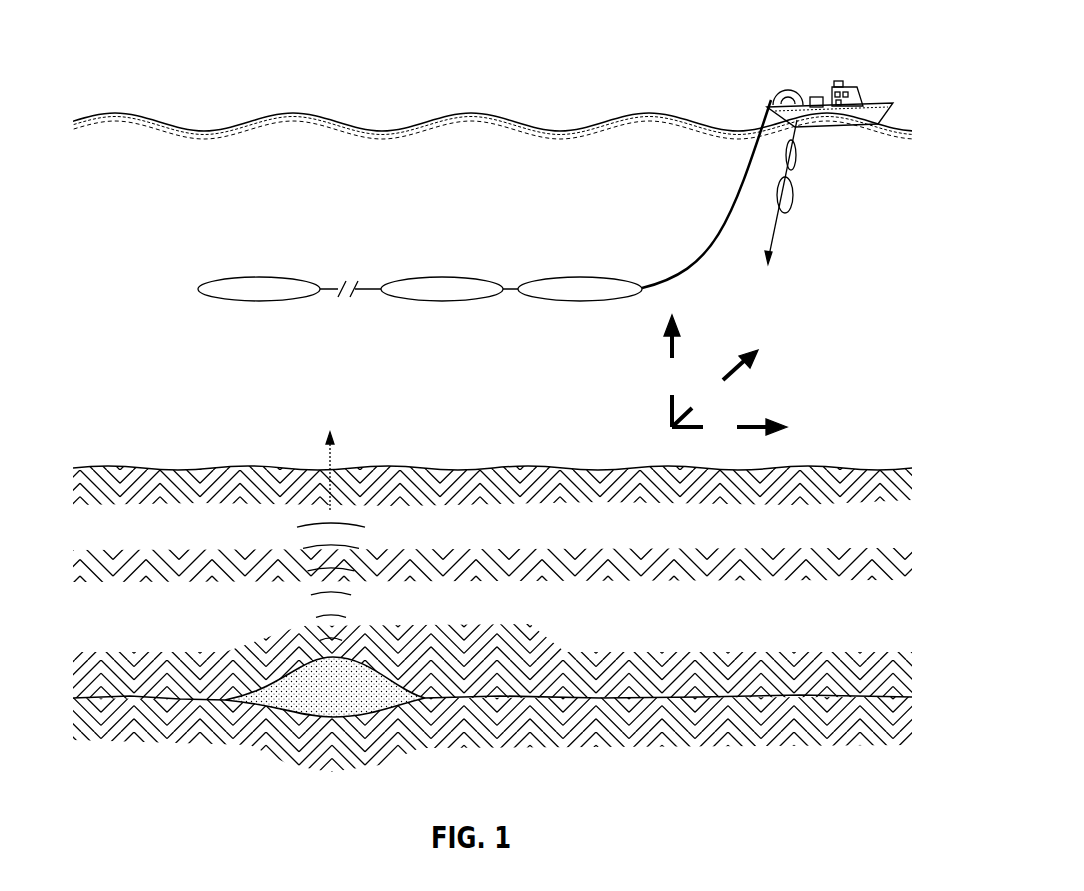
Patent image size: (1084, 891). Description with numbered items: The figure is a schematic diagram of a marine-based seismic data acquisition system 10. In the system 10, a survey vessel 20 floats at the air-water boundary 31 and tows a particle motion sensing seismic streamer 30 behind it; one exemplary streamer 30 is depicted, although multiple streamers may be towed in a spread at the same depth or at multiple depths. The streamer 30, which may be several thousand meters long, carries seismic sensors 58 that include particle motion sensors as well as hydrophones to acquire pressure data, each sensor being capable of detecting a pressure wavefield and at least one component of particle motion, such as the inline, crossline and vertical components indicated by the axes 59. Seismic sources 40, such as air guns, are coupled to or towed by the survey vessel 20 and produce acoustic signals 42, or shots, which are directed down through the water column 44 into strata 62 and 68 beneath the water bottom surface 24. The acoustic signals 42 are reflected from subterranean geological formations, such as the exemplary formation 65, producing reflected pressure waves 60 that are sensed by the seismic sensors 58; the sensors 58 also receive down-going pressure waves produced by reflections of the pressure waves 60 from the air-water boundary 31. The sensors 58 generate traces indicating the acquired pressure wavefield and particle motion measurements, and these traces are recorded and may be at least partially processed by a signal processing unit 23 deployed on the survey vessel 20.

The marine-based seismic data acquisition system 10 is at (278, 84).
The air-water boundary 31 is at (440, 114).
The survey vessel 20 is at (880, 103).
The signal processing unit 23 is at (821, 97).
The particle motion sensing seismic streamer 30 is at (738, 198).
The seismic source 40 is at (797, 158).
The acoustic signal 42 is at (778, 236).
The seismic sensor 58 is at (285, 277).
The water column 44 is at (825, 360).
The axes 59 is at (662, 435).
The water bottom surface 24 is at (796, 466).
The stratum 62 is at (473, 669).
The stratum 68 is at (473, 740).
The formation 65 is at (320, 700).
The pressure wave 60 is at (296, 604).